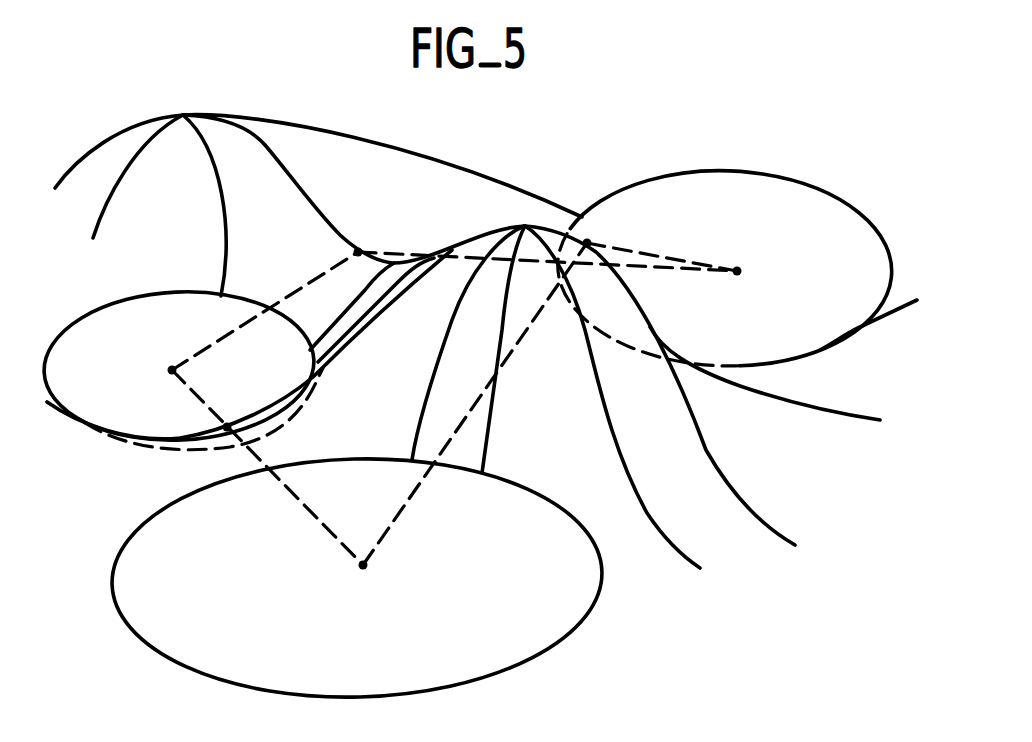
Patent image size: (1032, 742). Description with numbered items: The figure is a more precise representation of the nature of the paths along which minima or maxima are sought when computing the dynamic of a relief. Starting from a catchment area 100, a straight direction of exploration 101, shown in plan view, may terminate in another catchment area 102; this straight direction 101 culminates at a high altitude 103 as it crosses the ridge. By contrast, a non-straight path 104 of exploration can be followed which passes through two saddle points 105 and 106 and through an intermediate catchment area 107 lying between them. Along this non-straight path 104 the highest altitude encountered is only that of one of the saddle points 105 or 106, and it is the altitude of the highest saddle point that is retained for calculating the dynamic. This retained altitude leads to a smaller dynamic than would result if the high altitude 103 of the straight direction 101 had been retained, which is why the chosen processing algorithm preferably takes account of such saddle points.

The catchment area 100 is at (558, 568).
The straight direction of exploration 101 is at (523, 337).
The catchment area 102 is at (737, 269).
The high altitude 103 is at (587, 242).
The non-straight path of exploration 104 is at (248, 452).
The saddle point 105 is at (237, 426).
The saddle point 106 is at (358, 250).
The intermediate catchment area 107 is at (171, 369).